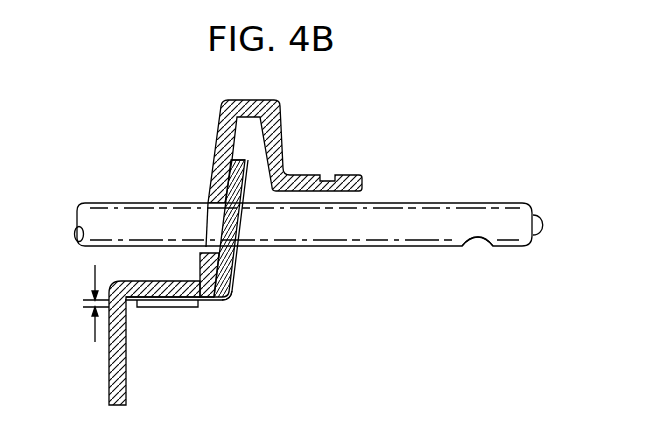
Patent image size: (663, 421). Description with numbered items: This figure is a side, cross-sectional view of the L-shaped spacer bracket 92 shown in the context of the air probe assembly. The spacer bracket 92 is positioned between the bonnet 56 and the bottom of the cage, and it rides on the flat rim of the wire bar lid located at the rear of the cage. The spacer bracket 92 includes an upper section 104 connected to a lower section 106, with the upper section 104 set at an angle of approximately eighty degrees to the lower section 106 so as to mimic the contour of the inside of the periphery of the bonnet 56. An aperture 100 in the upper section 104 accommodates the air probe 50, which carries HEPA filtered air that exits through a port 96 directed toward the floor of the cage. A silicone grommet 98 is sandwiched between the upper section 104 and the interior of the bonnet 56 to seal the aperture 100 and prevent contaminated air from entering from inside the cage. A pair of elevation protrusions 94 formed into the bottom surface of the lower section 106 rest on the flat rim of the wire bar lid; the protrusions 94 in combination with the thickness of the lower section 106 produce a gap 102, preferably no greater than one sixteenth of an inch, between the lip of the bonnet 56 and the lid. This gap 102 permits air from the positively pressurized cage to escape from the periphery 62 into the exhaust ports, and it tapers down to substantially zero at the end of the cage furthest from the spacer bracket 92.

The air probe 50 is at (415, 207).
The bonnet 56 is at (189, 113).
The periphery 62 is at (109, 358).
The spacer bracket 92 is at (232, 286).
The elevation protrusions 94 is at (160, 308).
The port 96 is at (480, 239).
The silicone grommet 98 is at (231, 266).
The aperture 100 is at (247, 198).
The gap 102 is at (83, 301).
The upper section 104 is at (246, 173).
The lower section 106 is at (222, 301).